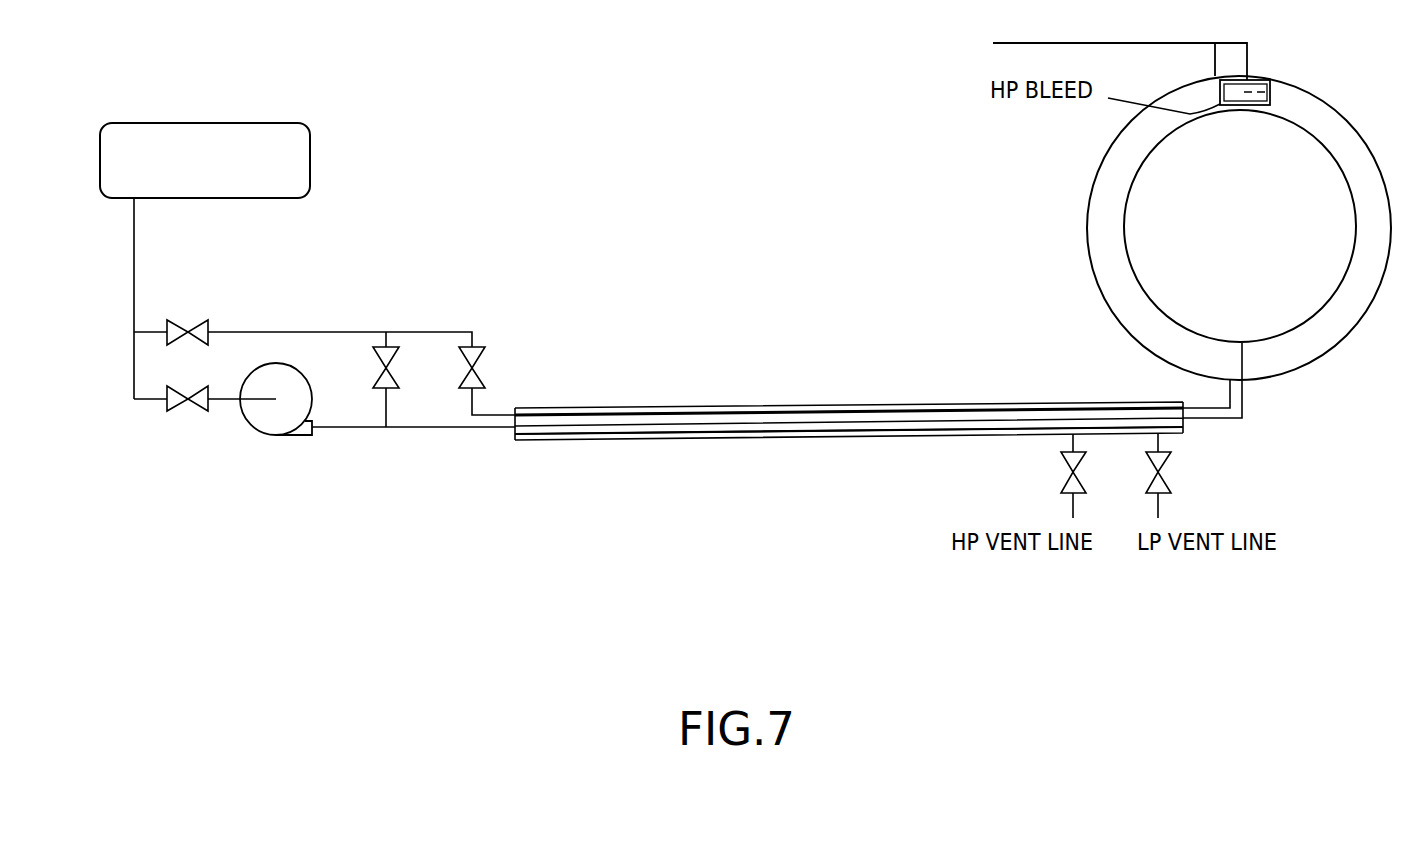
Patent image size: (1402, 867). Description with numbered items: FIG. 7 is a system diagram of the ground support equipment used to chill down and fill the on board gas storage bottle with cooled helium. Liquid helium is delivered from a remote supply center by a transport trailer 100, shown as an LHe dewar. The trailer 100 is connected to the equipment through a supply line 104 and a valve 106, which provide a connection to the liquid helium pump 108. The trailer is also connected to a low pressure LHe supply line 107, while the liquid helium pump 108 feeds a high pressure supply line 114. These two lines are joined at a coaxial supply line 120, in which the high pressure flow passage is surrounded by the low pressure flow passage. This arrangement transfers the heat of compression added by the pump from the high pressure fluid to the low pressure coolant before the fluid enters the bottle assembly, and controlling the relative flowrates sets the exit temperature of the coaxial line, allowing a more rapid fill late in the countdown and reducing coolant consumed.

The transport trailer 100 is at (310, 135).
The supply line 104 is at (134, 288).
The valve 106 is at (172, 408).
The low pressure LHe supply line 107 is at (237, 332).
The liquid helium pump 108 is at (313, 401).
The high pressure supply line 114 is at (443, 449).
The coaxial supply line 120 is at (618, 440).